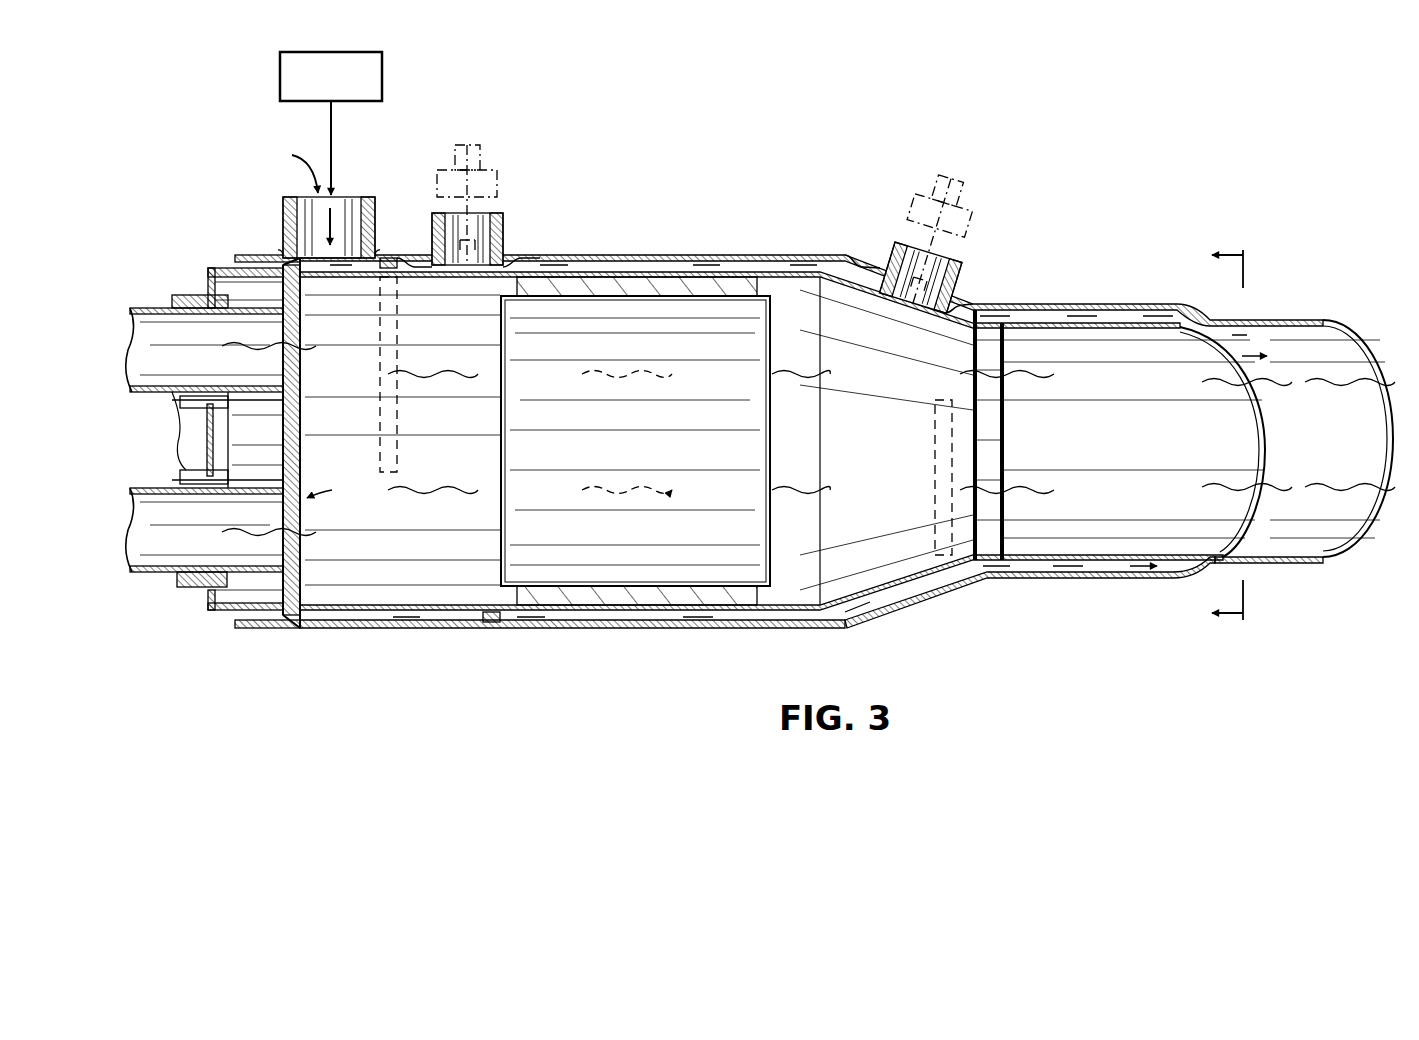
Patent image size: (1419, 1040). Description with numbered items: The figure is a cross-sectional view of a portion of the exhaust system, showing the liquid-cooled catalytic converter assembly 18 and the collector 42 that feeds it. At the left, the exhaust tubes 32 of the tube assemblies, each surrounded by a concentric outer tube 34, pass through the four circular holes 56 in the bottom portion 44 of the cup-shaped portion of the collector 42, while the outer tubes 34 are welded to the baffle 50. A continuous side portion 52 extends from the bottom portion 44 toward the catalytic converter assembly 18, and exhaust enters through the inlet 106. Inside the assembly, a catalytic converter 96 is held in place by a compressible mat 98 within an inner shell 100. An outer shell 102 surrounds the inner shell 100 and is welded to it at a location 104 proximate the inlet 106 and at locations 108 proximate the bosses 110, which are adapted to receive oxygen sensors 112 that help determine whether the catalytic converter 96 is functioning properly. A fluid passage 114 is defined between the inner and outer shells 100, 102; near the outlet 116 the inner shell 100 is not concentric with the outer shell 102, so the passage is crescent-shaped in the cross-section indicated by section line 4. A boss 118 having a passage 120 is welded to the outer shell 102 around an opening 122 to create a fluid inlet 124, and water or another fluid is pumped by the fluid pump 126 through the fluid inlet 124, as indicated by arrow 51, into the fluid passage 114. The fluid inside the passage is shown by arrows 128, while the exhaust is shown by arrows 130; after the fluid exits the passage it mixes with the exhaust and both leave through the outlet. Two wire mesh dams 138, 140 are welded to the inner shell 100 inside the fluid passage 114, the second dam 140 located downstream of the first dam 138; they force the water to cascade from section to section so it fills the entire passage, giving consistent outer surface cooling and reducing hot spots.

The section line 4- 4 is at (1232, 438).
The liquid-cooled catalytic converter assembly 18 is at (770, 250).
The exhaust tube 32 is at (155, 372).
The outer tube 34 is at (188, 294).
The collector 42 is at (219, 270).
The bottom portion 44 is at (288, 450).
The baffle 50 is at (216, 450).
The arrow 51 is at (337, 140).
The continuous side portion 52 is at (222, 610).
The circular holes 56 is at (285, 326).
The catalytic converter 96 is at (637, 433).
The compressible mat 98 is at (588, 290).
The inner shell 100 is at (754, 612).
The outer shell 102 is at (553, 627).
The weld location 104 is at (252, 256).
The inlet 106 is at (329, 482).
The weld locations 108 is at (418, 260).
The bosses 110 is at (503, 217).
The oxygen sensors 112 is at (500, 165).
The fluid passage 114 is at (627, 262).
The outlet 116 is at (1350, 328).
The boss 118 is at (372, 205).
The passage 120 is at (300, 197).
The opening 122 is at (340, 210).
The fluid inlet 124 is at (288, 165).
The fluid pump 126 is at (305, 52).
The arrows 128 is at (702, 262).
The arrows 130 is at (420, 486).
The first wire mesh dam 138 is at (380, 365).
The second wire mesh dam 140 is at (935, 520).